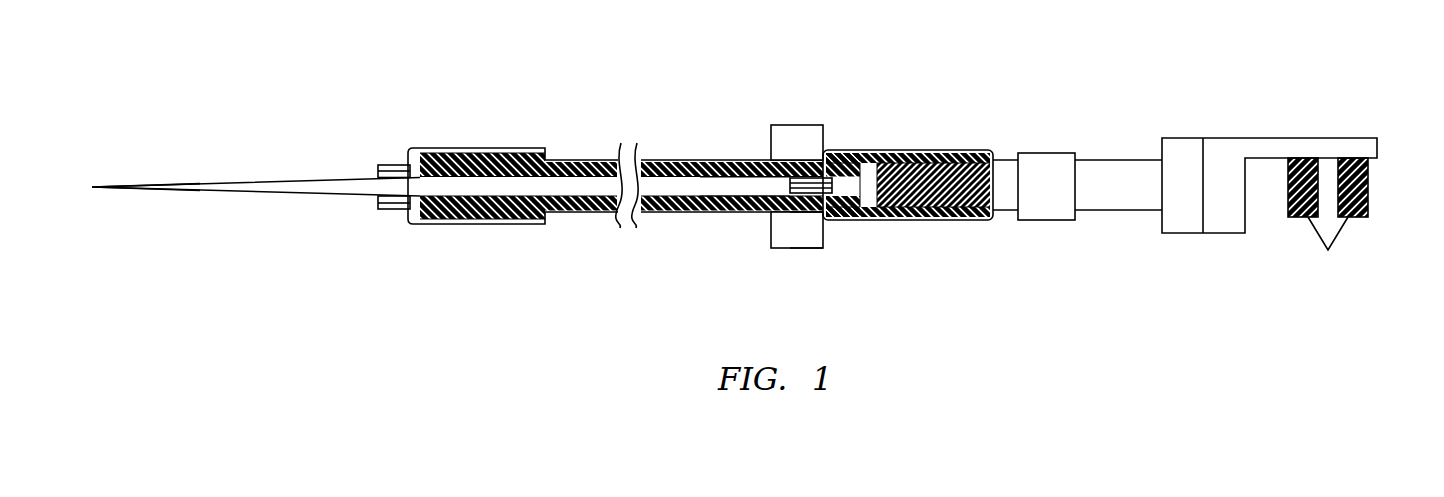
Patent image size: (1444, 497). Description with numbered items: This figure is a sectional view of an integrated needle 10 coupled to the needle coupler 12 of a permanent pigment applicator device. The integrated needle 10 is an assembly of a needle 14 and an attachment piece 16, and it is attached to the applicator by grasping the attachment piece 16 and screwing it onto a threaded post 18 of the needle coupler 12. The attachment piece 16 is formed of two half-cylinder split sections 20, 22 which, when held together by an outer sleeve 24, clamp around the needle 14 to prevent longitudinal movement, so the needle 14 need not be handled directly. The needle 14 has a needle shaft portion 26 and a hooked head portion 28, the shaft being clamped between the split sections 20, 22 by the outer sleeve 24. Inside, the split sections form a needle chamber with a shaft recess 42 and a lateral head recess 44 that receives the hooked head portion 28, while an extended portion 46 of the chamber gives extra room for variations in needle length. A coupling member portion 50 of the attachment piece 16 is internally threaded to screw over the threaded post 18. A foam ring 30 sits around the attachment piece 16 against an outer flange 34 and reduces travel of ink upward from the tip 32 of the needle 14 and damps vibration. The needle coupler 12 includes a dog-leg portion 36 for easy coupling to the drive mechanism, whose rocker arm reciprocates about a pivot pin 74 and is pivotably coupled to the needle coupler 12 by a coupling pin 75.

The integrated needle 10 is at (918, 56).
The needle coupler 12 is at (1292, 138).
The needle 14 is at (322, 210).
The attachment piece 16 is at (511, 236).
The threaded post 18 is at (938, 216).
The half-cylinder split section 20 is at (401, 165).
The half-cylinder split section 22 is at (402, 209).
The outer sleeve 24 is at (585, 214).
The needle shaft portion 26 is at (600, 162).
The hooked head portion 28 is at (782, 204).
The foam ring 30 is at (797, 125).
The tip 32 is at (165, 196).
The outer flange 34 is at (815, 223).
The dog-leg portion 36 is at (1047, 153).
The shaft recess 42 is at (678, 161).
The lateral head recess 44 is at (748, 211).
The extended portion 46 is at (806, 200).
The coupling member portion 50 is at (943, 152).
The pivot pin 74 is at (1370, 181).
The coupling pin 75 is at (1327, 226).